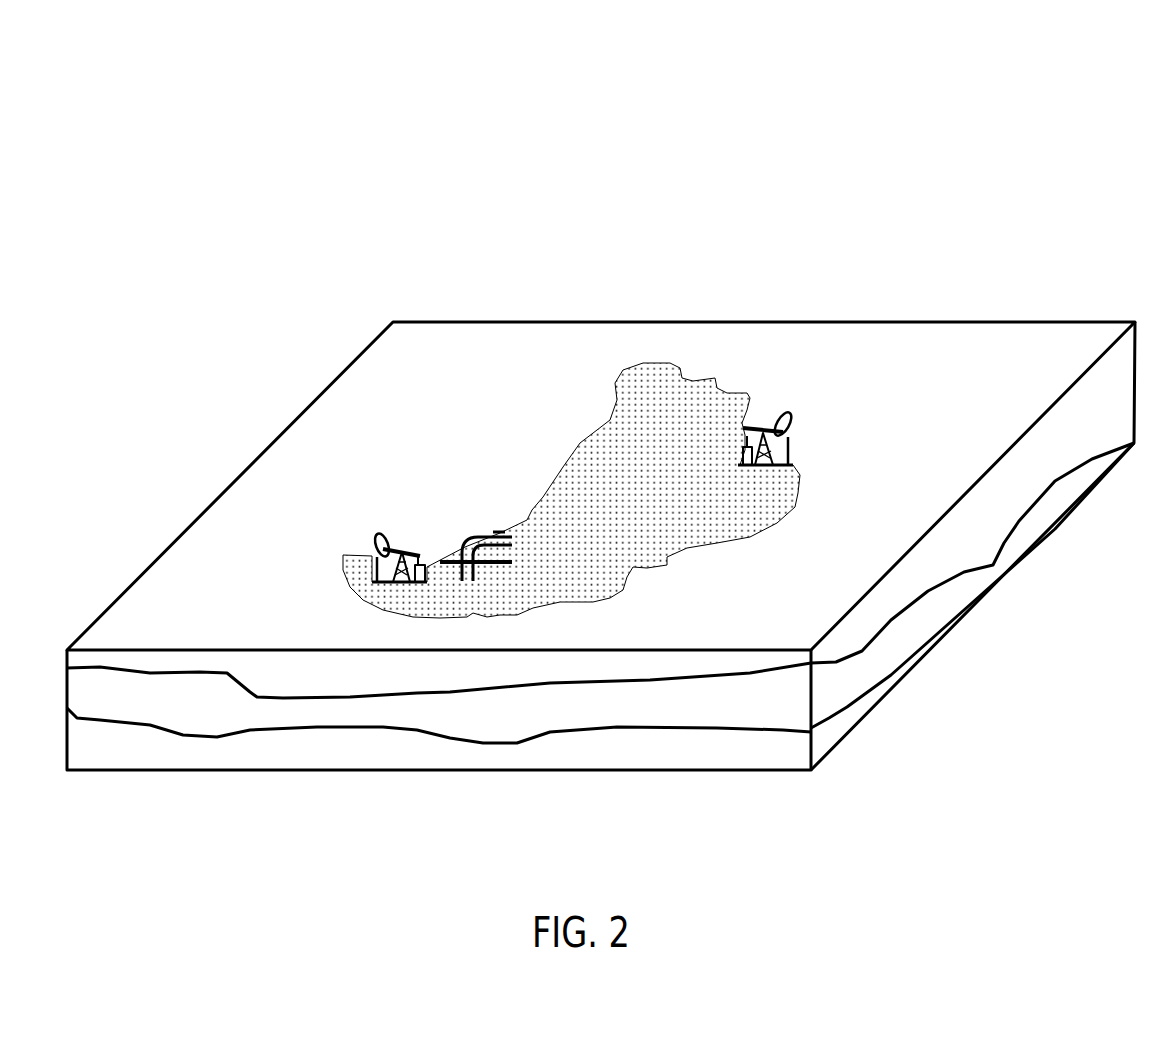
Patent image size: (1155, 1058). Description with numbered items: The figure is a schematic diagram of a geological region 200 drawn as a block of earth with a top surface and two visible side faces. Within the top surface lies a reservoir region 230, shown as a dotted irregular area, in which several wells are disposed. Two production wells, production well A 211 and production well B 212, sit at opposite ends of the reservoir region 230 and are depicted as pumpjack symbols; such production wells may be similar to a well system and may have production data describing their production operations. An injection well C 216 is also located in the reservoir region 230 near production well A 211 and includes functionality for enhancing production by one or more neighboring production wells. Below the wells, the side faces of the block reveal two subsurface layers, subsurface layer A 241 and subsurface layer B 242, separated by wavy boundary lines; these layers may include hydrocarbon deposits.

The geological region 200 is at (877, 126).
The production well A 211 is at (388, 522).
The production well B 212 is at (793, 404).
The injection well C 216 is at (461, 528).
The reservoir region 230 is at (696, 373).
The subsurface layer A 241 is at (760, 717).
The subsurface layer B 242 is at (412, 764).